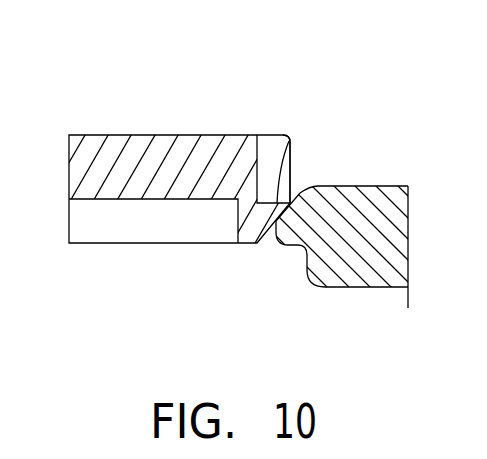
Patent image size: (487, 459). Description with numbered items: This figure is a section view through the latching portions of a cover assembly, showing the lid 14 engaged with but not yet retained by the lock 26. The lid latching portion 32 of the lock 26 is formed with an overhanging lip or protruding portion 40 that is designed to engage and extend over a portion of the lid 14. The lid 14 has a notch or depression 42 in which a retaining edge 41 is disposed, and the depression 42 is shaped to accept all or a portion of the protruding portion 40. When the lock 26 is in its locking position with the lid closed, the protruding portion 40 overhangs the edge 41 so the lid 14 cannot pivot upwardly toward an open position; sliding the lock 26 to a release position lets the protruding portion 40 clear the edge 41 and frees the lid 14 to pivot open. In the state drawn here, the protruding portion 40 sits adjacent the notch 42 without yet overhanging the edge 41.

The lid 14 is at (68, 170).
The notch or depression 42 is at (267, 152).
The edge 41 is at (291, 148).
The lid latching portion 32 is at (346, 186).
The overhanging lip or protruding portion 40 is at (296, 247).
The lock 26 is at (408, 211).